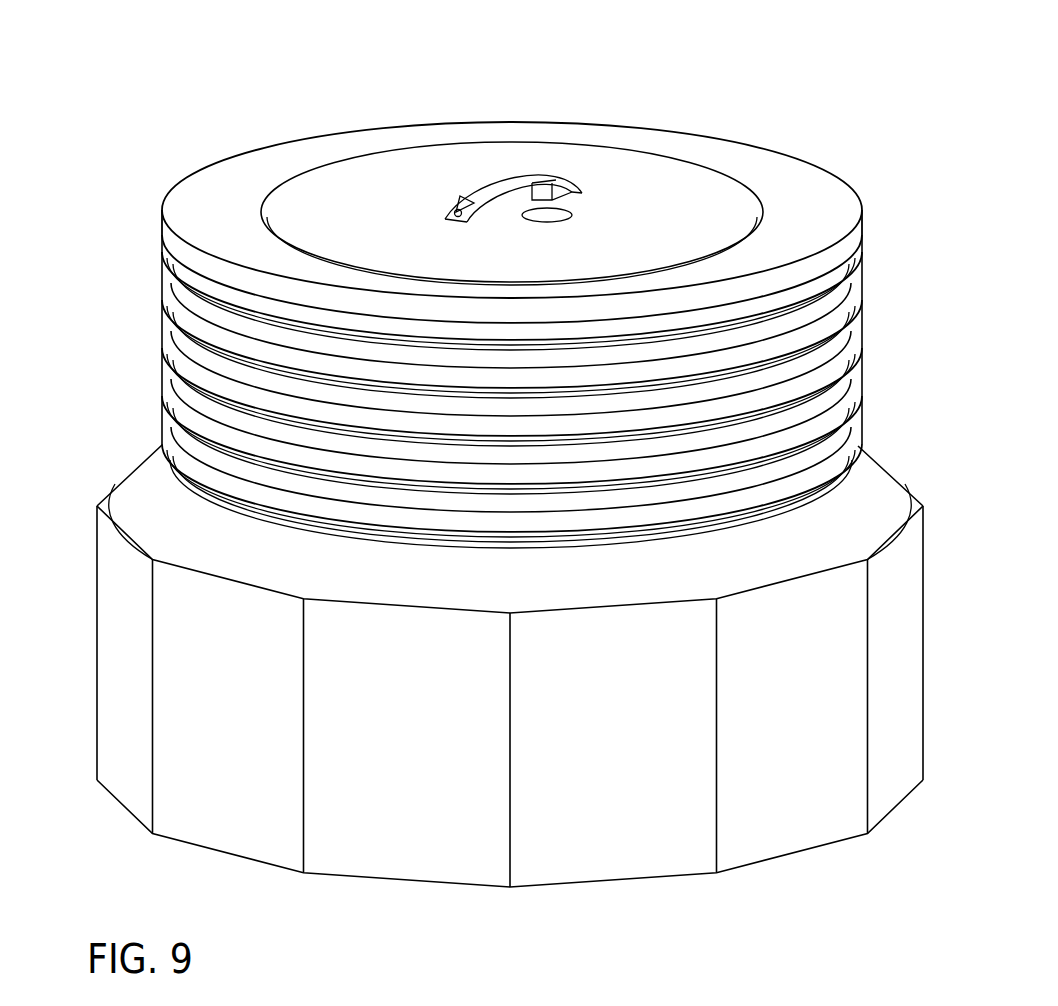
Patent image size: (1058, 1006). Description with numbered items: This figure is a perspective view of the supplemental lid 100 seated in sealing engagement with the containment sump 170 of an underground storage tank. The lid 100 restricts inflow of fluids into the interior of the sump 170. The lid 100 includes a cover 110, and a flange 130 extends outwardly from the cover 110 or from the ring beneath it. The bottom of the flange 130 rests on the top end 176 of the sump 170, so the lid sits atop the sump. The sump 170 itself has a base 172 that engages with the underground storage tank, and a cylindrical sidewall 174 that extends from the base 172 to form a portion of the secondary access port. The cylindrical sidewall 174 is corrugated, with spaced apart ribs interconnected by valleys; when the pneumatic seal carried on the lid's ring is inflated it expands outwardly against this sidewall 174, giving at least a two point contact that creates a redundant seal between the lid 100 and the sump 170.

The supplemental lid 100 is at (636, 66).
The cover 110 is at (390, 162).
The flange 130 is at (233, 172).
The containment sump 170 is at (895, 327).
The base 172 is at (578, 857).
The cylindrical sidewall 174 is at (130, 384).
The top end 176 is at (136, 247).